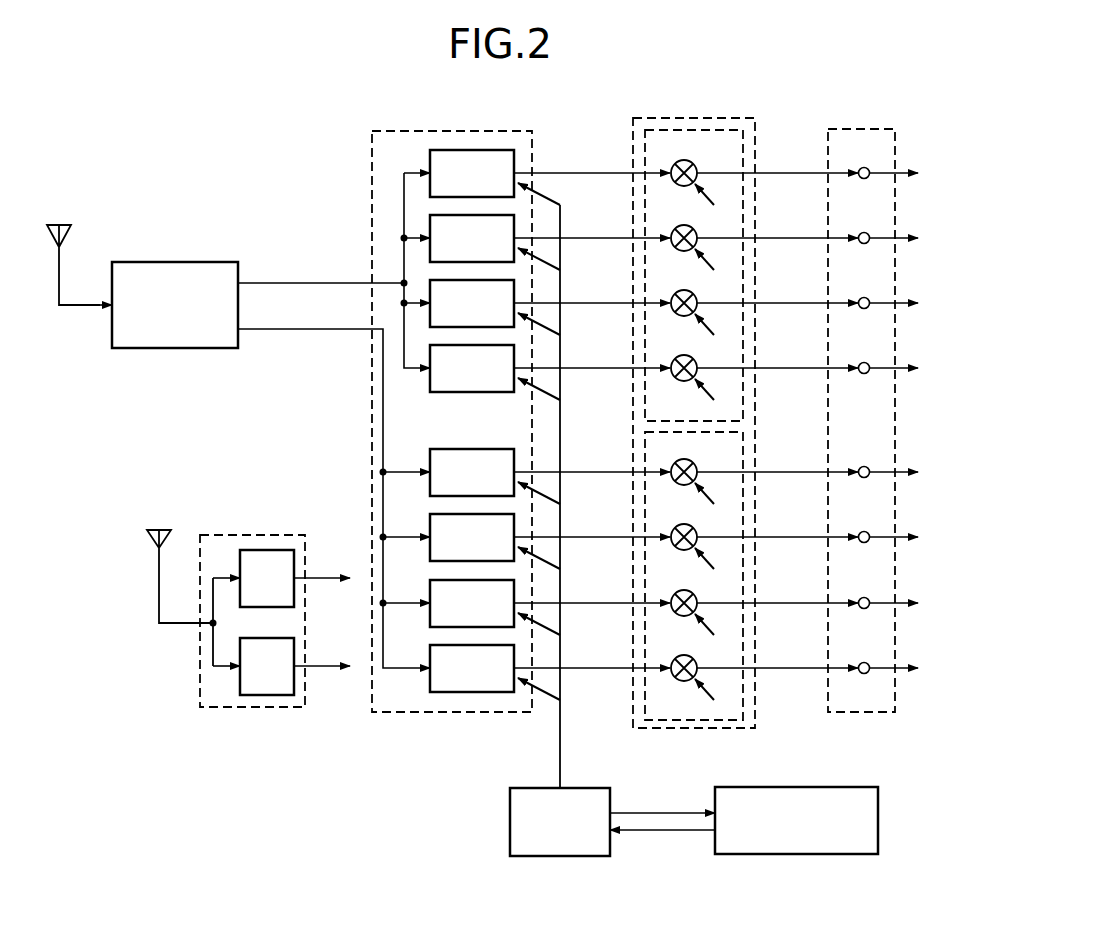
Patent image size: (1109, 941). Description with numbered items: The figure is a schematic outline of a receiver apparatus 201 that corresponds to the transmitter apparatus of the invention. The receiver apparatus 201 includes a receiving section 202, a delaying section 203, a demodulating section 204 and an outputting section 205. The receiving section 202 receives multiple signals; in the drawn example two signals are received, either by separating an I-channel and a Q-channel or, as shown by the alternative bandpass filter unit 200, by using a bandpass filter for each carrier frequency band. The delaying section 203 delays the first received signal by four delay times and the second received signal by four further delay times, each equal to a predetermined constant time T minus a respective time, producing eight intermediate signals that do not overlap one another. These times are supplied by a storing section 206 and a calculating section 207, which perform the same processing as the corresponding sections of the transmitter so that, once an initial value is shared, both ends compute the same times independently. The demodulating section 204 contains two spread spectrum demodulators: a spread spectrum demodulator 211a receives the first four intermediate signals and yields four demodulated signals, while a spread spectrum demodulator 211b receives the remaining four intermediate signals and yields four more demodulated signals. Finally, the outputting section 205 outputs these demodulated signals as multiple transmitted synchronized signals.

The band pass filter unit 200 is at (250, 535).
The receiver apparatus 201 is at (330, 153).
The receiving section 202 is at (206, 262).
The delaying section 203 is at (532, 152).
The demodulating section 204 is at (702, 118).
The outputting section 205 is at (860, 129).
The storing section 206 is at (510, 820).
The calculating section 207 is at (850, 787).
The spread spectrum demodulator 211a is at (745, 142).
The spread spectrum demodulator 211b is at (745, 442).